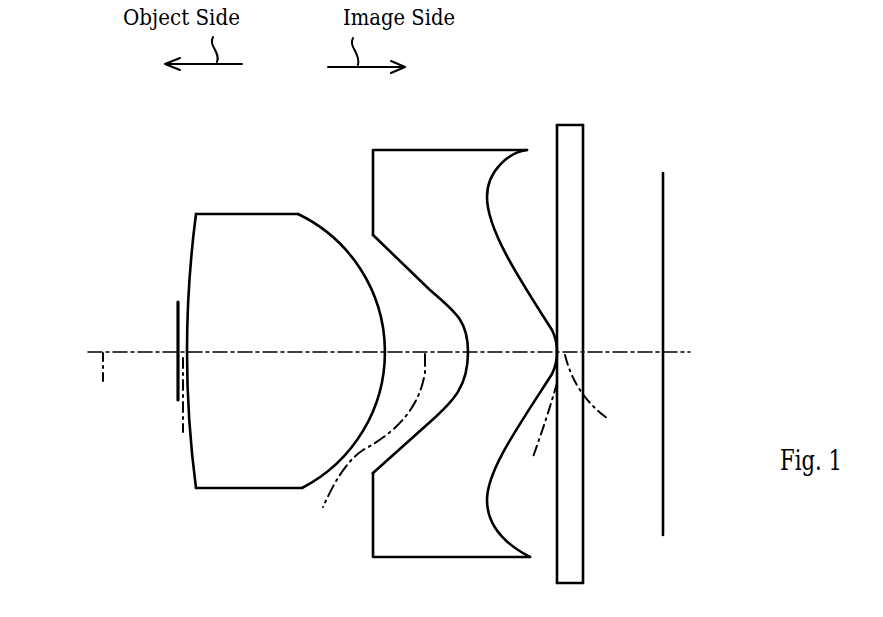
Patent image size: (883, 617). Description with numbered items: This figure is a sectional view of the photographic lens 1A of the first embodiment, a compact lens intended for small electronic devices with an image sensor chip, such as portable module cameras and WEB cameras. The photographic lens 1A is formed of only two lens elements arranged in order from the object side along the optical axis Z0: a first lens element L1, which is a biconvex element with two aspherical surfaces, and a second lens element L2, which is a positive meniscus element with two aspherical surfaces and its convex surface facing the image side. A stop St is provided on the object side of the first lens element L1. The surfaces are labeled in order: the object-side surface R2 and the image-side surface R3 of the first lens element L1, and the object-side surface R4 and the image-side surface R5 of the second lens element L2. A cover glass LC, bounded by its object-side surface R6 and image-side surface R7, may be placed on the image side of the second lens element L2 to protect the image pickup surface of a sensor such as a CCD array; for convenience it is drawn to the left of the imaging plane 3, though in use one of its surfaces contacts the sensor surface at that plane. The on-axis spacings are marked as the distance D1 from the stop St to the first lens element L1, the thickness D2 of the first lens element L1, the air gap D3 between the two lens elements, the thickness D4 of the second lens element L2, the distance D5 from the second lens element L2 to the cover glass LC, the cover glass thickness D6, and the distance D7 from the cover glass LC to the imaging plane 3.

The photographic lens 1A is at (96, 159).
The first lens element L1 is at (261, 327).
The second lens element L2 is at (465, 328).
The cover glass LC is at (580, 328).
The stop St is at (177, 315).
The object-side surface of the biconvex lens element R2 is at (194, 240).
The image-side surface of the biconvex lens element R3 is at (338, 242).
The object-side surface of the meniscus lens element R4 is at (441, 303).
The image-side surface of the meniscus lens element R5 is at (489, 197).
The object-side surface of the cover glass R6 is at (556, 160).
The image-side surface of the cover glass R7 is at (584, 152).
The optical axis Z0 is at (103, 384).
The on-axis distance between the stop and the first lens element D1 is at (178, 416).
The on-axis thickness of the biconvex lens element D2 is at (282, 373).
The on-axis air gap between the lens elements D3 is at (350, 447).
The on-axis thickness of the meniscus lens element D4 is at (513, 374).
The on-axis distance between the meniscus lens element and the cover glass D5 is at (539, 438).
The on-axis thickness of the cover glass D6 is at (593, 404).
The on-axis distance between the cover glass and the imaging plane D7 is at (621, 374).
The imaging plane 3 is at (664, 192).